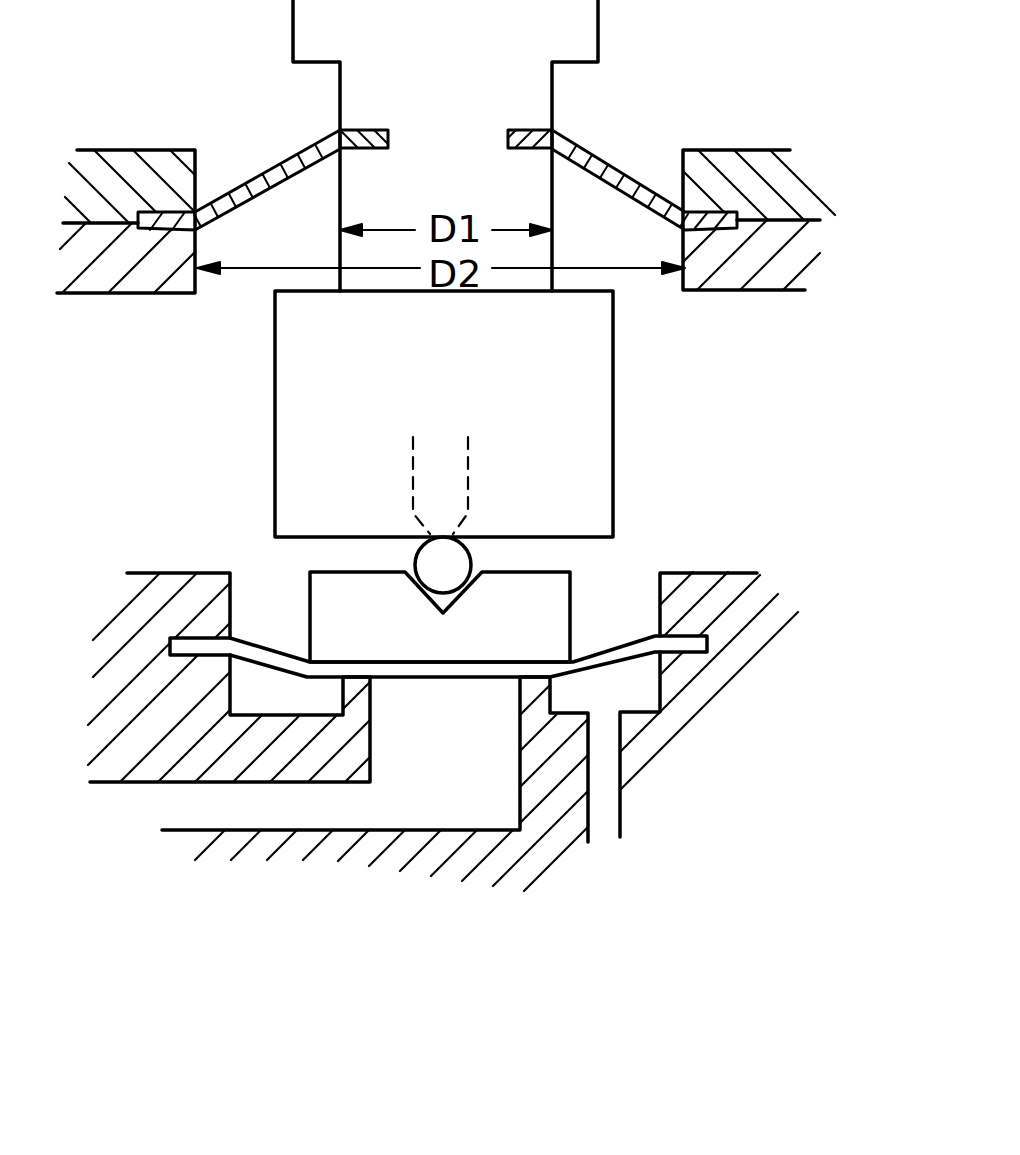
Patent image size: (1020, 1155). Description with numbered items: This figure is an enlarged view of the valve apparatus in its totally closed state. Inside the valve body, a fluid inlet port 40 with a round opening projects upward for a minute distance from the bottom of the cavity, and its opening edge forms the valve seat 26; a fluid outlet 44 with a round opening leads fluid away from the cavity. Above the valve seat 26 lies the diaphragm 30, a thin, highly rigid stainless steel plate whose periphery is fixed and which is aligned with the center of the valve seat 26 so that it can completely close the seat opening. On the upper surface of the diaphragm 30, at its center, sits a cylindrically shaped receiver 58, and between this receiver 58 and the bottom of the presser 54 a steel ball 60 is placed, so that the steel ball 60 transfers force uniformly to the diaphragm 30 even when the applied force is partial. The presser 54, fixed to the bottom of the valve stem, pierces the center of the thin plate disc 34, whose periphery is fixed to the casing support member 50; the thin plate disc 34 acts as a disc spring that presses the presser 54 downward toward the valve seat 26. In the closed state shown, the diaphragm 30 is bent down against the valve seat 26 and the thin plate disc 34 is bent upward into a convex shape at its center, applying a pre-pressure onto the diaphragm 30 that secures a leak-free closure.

The valve seat 26 is at (357, 684).
The diaphragm 30 is at (615, 657).
The thin plate disc 34 is at (620, 177).
The fluid inlet port 40 is at (463, 688).
The fluid outlet 44 is at (600, 703).
The casing support member 50 is at (810, 247).
The presser 54 is at (597, 481).
The receiver 58 is at (550, 611).
The steel ball 60 is at (428, 560).